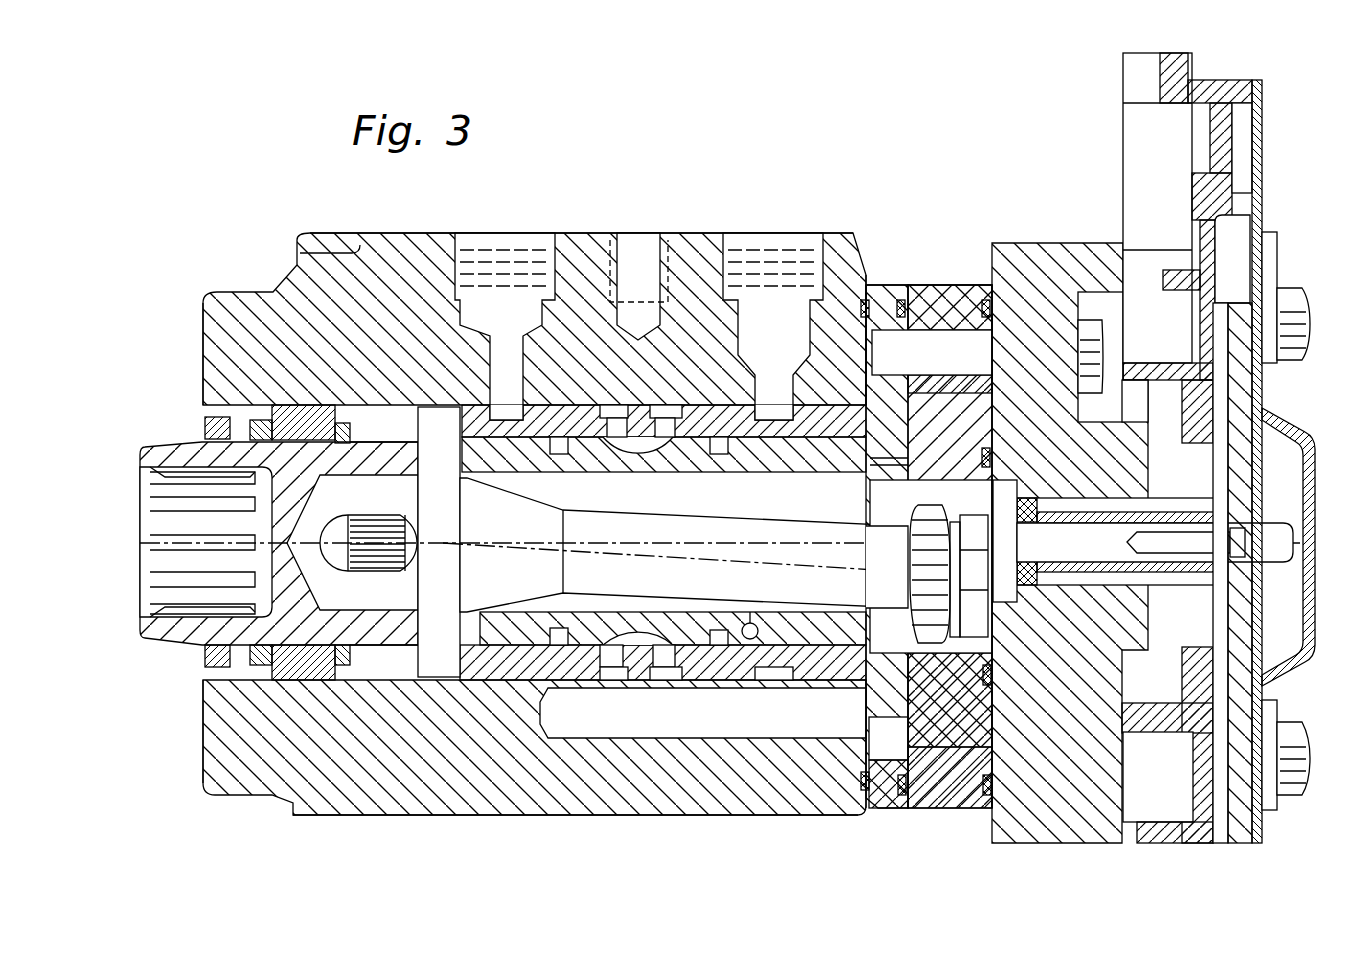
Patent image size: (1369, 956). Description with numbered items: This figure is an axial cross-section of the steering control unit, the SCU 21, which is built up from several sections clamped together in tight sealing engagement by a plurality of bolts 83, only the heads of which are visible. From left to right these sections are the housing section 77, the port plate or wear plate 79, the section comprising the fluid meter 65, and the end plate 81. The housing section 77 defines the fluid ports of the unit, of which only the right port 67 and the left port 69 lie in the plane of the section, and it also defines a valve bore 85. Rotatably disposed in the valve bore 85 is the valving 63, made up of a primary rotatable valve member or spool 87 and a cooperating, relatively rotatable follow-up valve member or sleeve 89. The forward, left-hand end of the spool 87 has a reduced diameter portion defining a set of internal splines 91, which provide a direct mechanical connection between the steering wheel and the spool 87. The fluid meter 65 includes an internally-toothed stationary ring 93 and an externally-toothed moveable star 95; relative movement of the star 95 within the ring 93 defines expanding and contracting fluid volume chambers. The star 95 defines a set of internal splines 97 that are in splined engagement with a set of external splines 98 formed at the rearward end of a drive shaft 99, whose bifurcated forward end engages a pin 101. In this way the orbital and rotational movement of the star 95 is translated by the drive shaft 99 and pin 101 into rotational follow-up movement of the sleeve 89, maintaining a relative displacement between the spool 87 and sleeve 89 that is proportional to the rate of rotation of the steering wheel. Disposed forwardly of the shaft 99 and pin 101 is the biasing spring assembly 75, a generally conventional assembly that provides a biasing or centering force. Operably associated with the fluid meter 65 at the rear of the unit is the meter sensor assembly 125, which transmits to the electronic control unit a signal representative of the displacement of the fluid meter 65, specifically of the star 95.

The steering control unit 21 is at (244, 270).
The valving 63 is at (770, 447).
The fluid meter 65 is at (937, 268).
The right port 67 is at (795, 255).
The left port 69 is at (520, 255).
The biasing spring assembly 75 is at (383, 563).
The housing section 77 is at (655, 795).
The port plate 79 is at (885, 800).
The end plate 81 is at (1035, 810).
The bolts 83 is at (1090, 330).
The valve bore 85 is at (378, 690).
The rotatable valve member 87 is at (620, 470).
The follow-up valve member 89 is at (702, 670).
The internal splines 91 is at (192, 530).
The stationary ring 93 is at (948, 800).
The moveable star 95 is at (956, 420).
The internal splines 97 is at (1090, 650).
The external splines 98 is at (930, 535).
The drive shaft 99 is at (723, 596).
The pin 101 is at (440, 462).
The meter sensor assembly 125 is at (1288, 188).